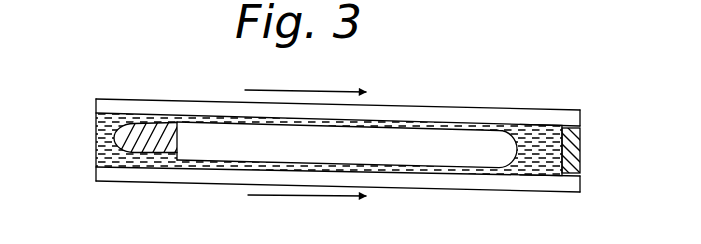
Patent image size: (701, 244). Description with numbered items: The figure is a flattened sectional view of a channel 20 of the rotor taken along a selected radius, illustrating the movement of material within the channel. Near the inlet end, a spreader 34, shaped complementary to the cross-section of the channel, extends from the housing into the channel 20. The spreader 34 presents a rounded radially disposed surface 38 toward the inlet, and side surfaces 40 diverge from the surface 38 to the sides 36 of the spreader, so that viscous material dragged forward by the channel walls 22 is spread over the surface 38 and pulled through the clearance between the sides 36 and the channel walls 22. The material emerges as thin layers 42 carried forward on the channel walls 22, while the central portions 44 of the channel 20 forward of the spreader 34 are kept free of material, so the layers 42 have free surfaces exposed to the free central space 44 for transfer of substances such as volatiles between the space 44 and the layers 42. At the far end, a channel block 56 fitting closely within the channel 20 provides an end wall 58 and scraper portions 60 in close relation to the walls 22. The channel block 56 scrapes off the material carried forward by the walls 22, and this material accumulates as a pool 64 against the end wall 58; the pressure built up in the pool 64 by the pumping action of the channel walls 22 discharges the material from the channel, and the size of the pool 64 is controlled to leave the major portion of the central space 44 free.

The channel 20 is at (259, 171).
The channel walls 22 is at (207, 128).
The spreader 34 is at (135, 127).
The sides of spreader 36 is at (174, 129).
The rounded radially disposed surface 38 is at (95, 139).
The side surfaces 40 is at (128, 124).
The thin layers 42 is at (364, 128).
The central portions of channel 44 is at (412, 143).
The channel block 56 is at (581, 150).
The end wall 58 is at (558, 137).
The scraper portions 60 is at (554, 125).
The pool 64 is at (523, 163).